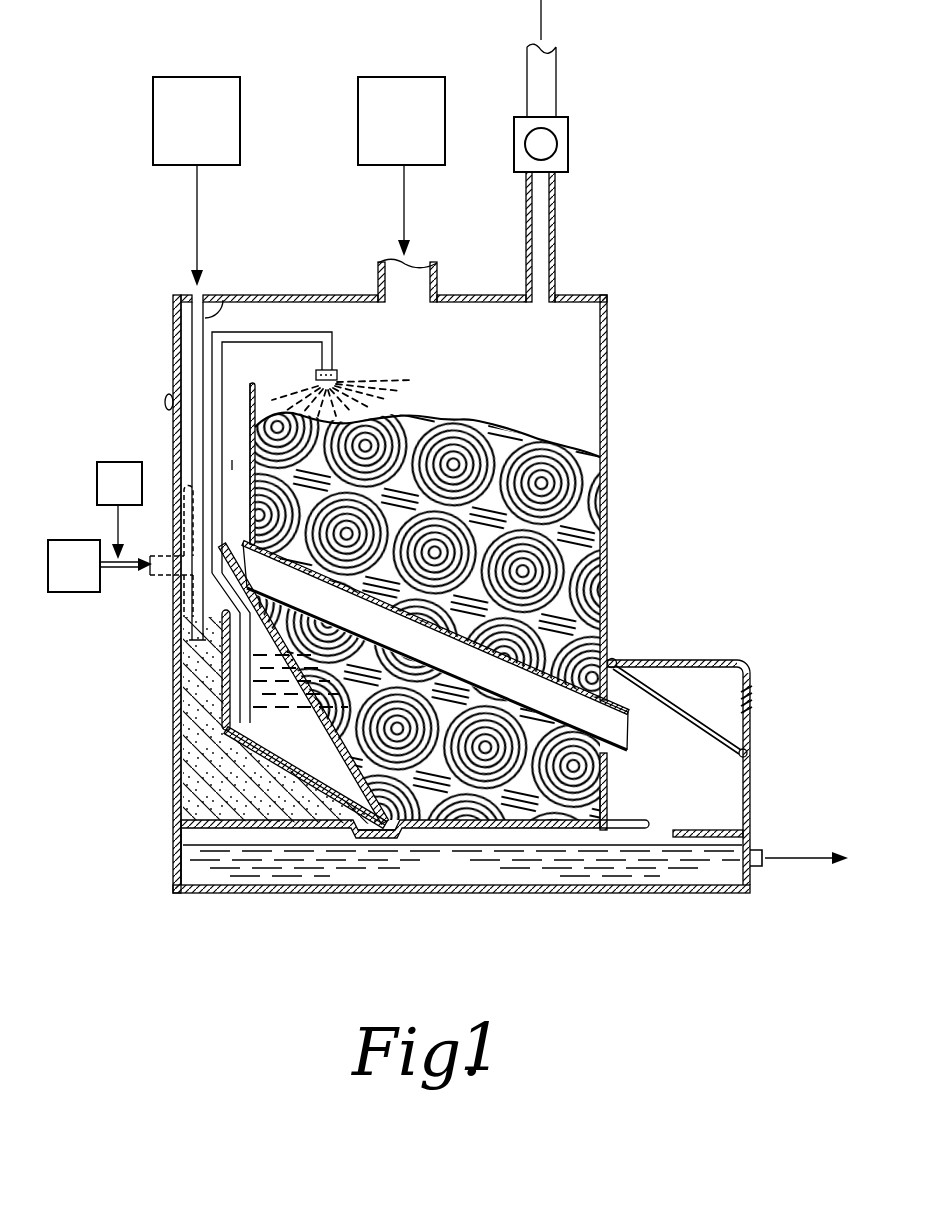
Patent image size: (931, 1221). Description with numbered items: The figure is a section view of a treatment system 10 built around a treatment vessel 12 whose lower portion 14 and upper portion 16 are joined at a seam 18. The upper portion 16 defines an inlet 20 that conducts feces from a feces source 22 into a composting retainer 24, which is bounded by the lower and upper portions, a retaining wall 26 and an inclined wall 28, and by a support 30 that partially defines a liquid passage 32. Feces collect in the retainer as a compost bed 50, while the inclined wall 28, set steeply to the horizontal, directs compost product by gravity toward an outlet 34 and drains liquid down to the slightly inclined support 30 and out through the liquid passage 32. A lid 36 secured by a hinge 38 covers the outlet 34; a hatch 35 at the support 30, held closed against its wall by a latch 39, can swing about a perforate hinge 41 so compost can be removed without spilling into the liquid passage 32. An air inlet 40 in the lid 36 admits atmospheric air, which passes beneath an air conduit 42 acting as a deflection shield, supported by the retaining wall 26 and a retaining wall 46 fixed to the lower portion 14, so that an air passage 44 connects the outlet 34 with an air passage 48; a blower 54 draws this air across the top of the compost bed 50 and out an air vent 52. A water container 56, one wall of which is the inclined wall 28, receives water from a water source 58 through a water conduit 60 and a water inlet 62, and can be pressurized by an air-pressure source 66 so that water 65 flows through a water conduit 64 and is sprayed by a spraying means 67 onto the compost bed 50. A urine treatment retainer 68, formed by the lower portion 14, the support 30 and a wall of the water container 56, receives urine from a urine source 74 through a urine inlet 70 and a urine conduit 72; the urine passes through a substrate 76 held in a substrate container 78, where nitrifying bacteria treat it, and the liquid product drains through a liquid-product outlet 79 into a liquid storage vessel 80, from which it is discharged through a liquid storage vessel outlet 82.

The treatment system 10 is at (728, 170).
The treatment vessel 12 is at (616, 366).
The lower portion 14 is at (238, 465).
The upper portion 16 is at (173, 318).
The seam 18 is at (172, 408).
The inlet 20 is at (412, 283).
The feces source 22 is at (386, 139).
The composting retainer 24 is at (500, 402).
The retaining wall 26 is at (245, 408).
The inclined wall 28 is at (425, 830).
The support 30 is at (592, 835).
The liquid passage 32 is at (670, 840).
The outlet 34 is at (712, 718).
The hatch 35 is at (612, 800).
The lid 36 is at (693, 660).
The hinge 38 is at (616, 659).
The latch 39 is at (612, 753).
The air inlet 40 is at (752, 695).
The hinge 41 is at (628, 836).
The air conduit 42 is at (627, 732).
The air passage 44 is at (318, 630).
The retaining wall 46 is at (585, 755).
The air passage 48 is at (247, 458).
The compost bed 50 is at (600, 487).
The air vent 52 is at (555, 290).
The blower 54 is at (568, 135).
The water container 56 is at (186, 532).
The water source 58 is at (57, 585).
The water conduit 60 is at (135, 570).
The water inlet 62 is at (160, 578).
The water conduit 64 is at (266, 330).
The water 65 is at (279, 748).
The air-pressure source 66 is at (102, 501).
The spraying means 67 is at (338, 373).
The urine treatment retainer 68 is at (198, 777).
The urine inlet 70 is at (197, 296).
The urine conduit 72 is at (222, 298).
The urine source 74 is at (179, 139).
The substrate 76 is at (205, 810).
The substrate container 78 is at (222, 672).
The liquid-product outlet 79 is at (363, 836).
The liquid storage vessel 80 is at (188, 851).
The liquid storage vessel outlet 82 is at (752, 853).